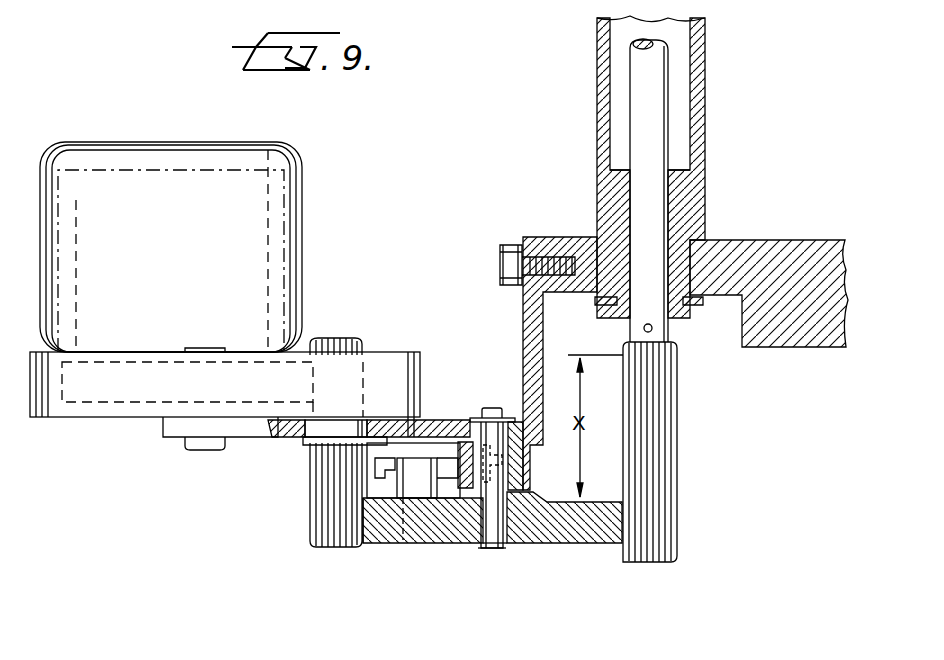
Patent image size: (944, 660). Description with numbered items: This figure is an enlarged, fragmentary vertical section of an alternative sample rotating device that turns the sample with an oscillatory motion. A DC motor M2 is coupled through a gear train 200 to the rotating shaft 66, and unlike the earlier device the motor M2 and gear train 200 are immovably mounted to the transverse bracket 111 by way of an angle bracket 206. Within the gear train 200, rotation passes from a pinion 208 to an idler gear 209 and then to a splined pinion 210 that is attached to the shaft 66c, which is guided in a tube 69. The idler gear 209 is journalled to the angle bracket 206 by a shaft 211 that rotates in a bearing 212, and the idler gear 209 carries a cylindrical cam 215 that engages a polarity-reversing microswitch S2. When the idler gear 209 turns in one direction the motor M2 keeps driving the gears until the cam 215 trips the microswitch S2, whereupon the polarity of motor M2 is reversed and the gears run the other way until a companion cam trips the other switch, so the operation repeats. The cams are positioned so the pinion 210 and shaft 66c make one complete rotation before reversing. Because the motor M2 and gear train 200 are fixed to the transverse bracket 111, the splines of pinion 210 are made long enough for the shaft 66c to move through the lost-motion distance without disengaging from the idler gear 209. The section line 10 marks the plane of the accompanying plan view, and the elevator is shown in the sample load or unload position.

The motor M2 is at (185, 266).
The line 10— 10 is at (253, 480).
The rotating shaft 66 is at (632, 124).
The shaft 66c is at (612, 200).
The tube 69 is at (705, 90).
The transverse bracket 111 is at (763, 248).
The angle bracket 206 is at (523, 335).
The polarity-reversing microswitch S2 is at (410, 450).
The bearing 212 is at (475, 438).
The shaft 211 is at (500, 487).
The pinion 208 is at (312, 506).
The gear train 200 is at (372, 553).
The cam 215 is at (423, 492).
The idler gear 209 is at (592, 543).
The splined pinion 210 is at (677, 523).